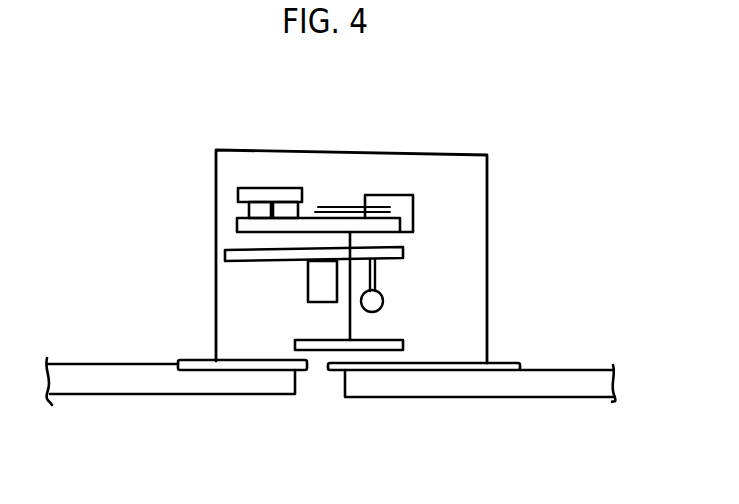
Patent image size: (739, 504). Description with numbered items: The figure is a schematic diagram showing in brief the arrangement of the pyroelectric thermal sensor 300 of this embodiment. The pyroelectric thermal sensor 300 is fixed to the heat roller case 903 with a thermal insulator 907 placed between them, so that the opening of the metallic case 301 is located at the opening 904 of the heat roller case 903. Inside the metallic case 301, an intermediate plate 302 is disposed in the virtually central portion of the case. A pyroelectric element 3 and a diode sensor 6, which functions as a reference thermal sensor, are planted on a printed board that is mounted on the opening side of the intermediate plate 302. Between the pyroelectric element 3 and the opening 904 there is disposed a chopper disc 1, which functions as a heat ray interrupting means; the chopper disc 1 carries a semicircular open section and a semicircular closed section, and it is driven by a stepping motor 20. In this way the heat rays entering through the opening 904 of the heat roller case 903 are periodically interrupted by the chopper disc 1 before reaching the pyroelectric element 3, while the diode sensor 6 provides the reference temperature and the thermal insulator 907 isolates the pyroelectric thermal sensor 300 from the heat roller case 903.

The pyroelectric thermal sensor 300 is at (480, 126).
The metallic case 301 is at (410, 151).
The stepping motor 20 is at (340, 203).
The intermediate plate 302 is at (403, 257).
The pyroelectric element 3 is at (313, 281).
The diode sensor 6 is at (383, 300).
The chopper disc 1 is at (403, 345).
The opening 904 is at (317, 382).
The thermal insulator 907 is at (420, 370).
The heat roller case 903 is at (493, 388).